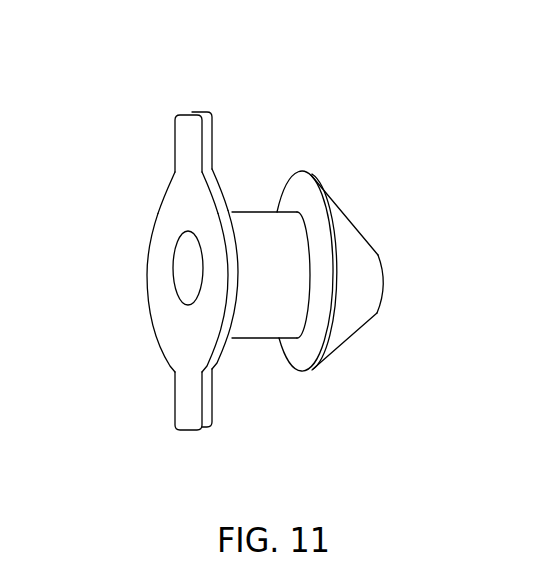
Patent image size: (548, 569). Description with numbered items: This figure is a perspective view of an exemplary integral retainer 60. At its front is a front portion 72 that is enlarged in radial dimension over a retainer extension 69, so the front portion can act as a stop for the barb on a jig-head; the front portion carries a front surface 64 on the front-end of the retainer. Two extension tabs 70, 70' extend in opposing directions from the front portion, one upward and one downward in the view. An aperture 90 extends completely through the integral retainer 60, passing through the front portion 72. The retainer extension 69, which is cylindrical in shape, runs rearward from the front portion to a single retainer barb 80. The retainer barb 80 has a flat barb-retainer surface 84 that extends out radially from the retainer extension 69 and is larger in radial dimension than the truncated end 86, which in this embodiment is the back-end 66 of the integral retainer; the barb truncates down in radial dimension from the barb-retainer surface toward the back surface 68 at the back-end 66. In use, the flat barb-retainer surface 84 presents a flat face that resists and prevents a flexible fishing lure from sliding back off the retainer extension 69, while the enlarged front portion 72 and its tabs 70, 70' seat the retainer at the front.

The integral retainer 60 is at (121, 122).
The front surface 64 is at (171, 341).
The back-end 66 is at (380, 256).
The back surface 68 is at (388, 294).
The retainer extension 69 is at (267, 313).
The extension tab 70 is at (191, 99).
The extension tab 70' is at (163, 436).
The front portion 72 is at (190, 198).
The retainer barb 80 is at (332, 206).
The barb-retainer surface 84 is at (299, 197).
The truncated end 86 is at (378, 250).
The aperture 90 is at (195, 263).